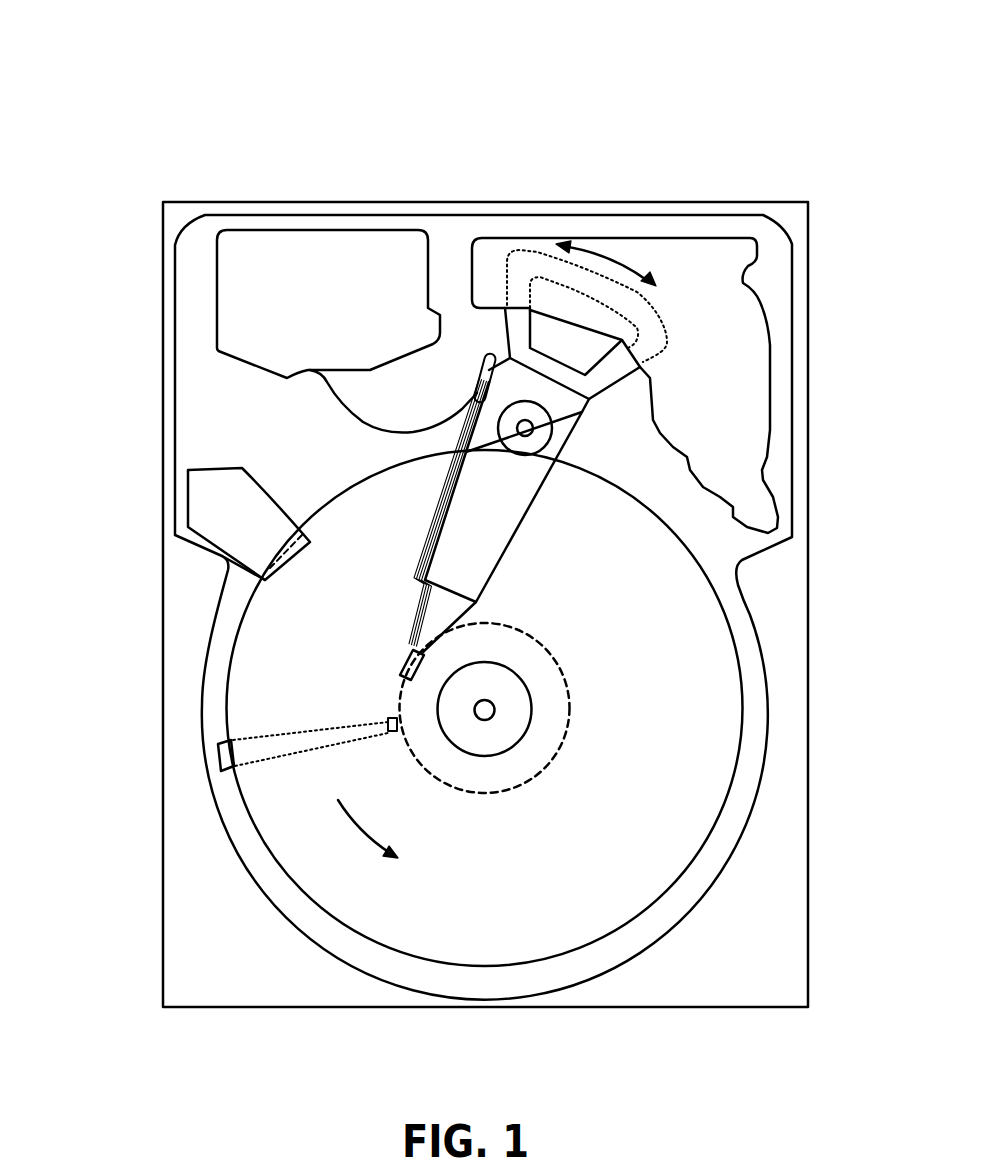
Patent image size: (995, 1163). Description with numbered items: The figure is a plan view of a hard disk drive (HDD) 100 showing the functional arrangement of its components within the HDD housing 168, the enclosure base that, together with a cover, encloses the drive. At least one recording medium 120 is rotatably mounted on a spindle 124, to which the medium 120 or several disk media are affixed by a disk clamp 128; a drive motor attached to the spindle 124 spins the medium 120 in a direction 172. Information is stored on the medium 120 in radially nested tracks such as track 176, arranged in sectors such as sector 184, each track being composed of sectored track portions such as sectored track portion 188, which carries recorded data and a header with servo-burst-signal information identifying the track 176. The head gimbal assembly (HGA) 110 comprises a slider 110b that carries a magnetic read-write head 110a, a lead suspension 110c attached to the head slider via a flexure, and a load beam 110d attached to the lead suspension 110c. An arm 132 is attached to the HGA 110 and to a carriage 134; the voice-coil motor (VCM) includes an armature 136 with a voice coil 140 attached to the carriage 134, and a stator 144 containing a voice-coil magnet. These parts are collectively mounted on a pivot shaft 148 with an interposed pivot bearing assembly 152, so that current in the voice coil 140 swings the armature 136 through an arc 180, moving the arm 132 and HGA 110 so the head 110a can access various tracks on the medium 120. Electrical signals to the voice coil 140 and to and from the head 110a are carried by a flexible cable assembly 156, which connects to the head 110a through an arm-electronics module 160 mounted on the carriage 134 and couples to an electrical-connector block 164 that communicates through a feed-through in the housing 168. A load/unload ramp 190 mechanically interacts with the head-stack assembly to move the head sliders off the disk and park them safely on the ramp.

The hard disk drive 100 is at (94, 86).
The head gimbal assembly 110 is at (85, 510).
The magnetic read-write head 110a is at (403, 677).
The slider 110b is at (412, 649).
The lead suspension 110c is at (420, 607).
The load beam 110d is at (418, 580).
The recording medium 120 is at (668, 662).
The spindle 124 is at (495, 711).
The disk clamp 128 is at (512, 728).
The arm 132 is at (478, 543).
The carriage 134 is at (543, 462).
The armature 136 is at (505, 345).
The voice coil 140 is at (520, 322).
The stator 144 is at (738, 332).
The pivot shaft 148 is at (534, 428).
The pivot bearing assembly 152 is at (538, 440).
The flexible cable assembly 156 is at (342, 406).
The arm-electronics module 160 is at (473, 395).
The electrical-connector block 164 is at (243, 302).
The HDD housing 168 is at (791, 213).
The direction 172 is at (373, 834).
The track 176 is at (562, 668).
The arc 180 is at (603, 257).
The sector 184 is at (216, 757).
The sectored track portion 188 is at (388, 724).
The load/unload ramp 190 is at (197, 487).